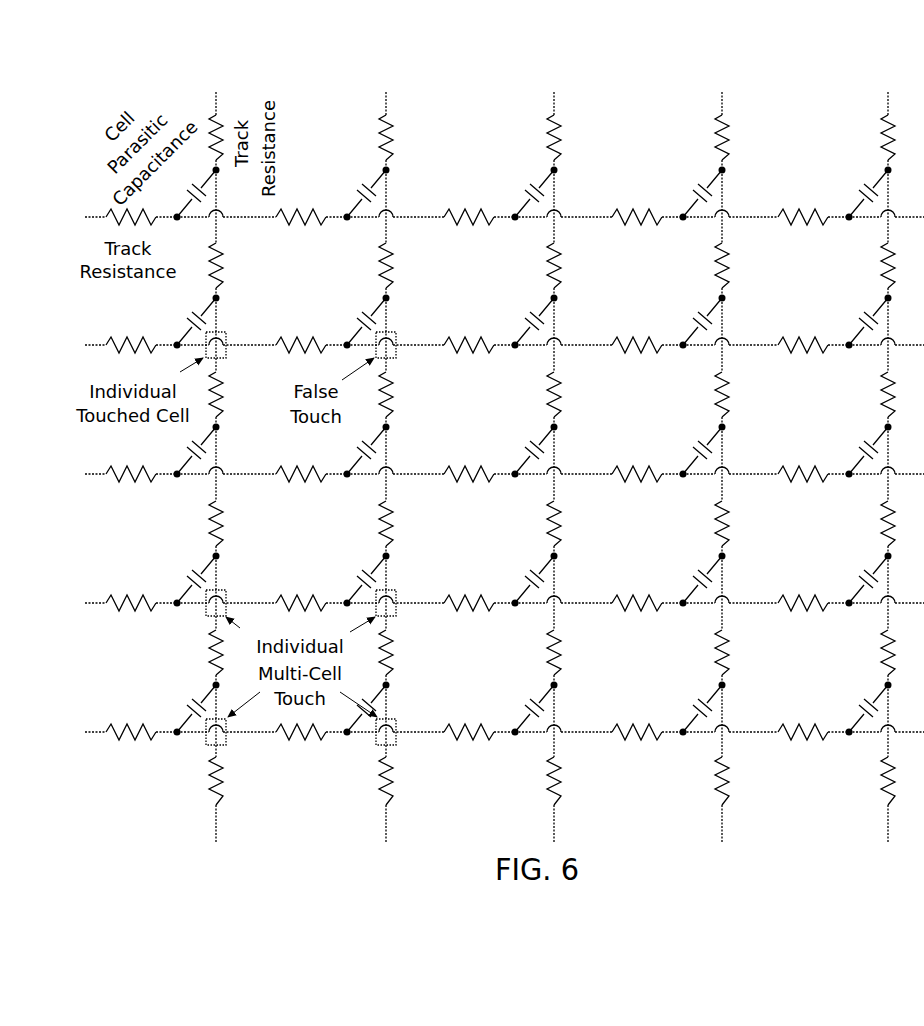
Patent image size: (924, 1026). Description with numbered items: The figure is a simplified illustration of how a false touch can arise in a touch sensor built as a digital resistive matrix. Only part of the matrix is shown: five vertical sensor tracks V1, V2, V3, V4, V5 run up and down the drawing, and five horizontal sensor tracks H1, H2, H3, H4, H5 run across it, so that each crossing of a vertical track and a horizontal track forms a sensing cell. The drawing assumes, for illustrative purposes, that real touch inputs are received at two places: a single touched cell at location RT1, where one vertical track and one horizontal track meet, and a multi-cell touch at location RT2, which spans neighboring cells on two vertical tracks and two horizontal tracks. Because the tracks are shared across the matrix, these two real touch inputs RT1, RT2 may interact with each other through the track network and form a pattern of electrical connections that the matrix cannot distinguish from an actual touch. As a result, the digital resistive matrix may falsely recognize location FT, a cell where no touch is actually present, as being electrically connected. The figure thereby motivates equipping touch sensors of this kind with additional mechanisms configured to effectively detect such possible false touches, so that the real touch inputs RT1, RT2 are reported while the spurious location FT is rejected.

The horizontal sensor track H1 is at (484, 216).
The horizontal sensor track H2 is at (484, 344).
The horizontal sensor track H3 is at (484, 473).
The horizontal sensor track H4 is at (484, 602).
The horizontal sensor track H5 is at (484, 731).
The vertical sensor track V1 is at (218, 452).
The vertical sensor track V2 is at (388, 452).
The vertical sensor track V3 is at (556, 452).
The vertical sensor track V4 is at (724, 452).
The vertical sensor track V5 is at (890, 452).
The real touch input location RT1 is at (230, 331).
The false touch location FT is at (404, 334).
The real touch input location RT2 is at (283, 627).